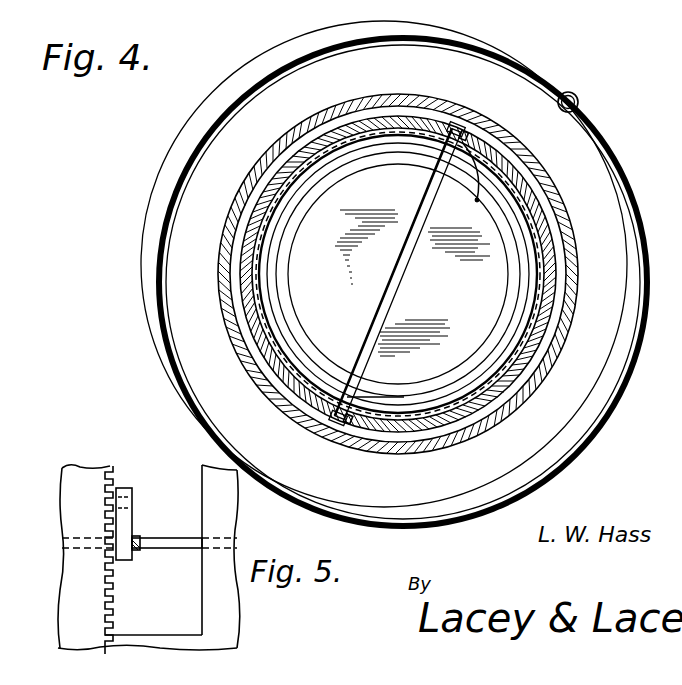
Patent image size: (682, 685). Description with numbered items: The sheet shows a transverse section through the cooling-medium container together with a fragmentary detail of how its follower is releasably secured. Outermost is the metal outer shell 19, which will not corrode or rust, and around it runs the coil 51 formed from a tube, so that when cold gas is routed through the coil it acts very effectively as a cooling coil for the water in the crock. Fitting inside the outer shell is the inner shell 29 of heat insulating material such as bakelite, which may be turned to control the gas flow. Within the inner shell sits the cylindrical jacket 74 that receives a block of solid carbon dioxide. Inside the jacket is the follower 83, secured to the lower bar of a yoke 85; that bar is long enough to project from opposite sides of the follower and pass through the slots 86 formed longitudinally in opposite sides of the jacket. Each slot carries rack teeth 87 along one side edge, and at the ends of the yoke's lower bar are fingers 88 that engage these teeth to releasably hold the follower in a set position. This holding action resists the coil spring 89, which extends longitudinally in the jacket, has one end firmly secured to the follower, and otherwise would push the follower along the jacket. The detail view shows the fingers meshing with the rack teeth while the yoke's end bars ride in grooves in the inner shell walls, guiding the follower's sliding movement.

In FIG. 4, the outer shell 19 is at (518, 163).
In FIG. 4, the inner shell 29 is at (529, 198).
In FIG. 4, the coil 51 is at (605, 402).
In FIG. 4, the cylindrical jacket 74 is at (540, 248).
In FIG. 5, the cylindrical jacket 74 is at (220, 598).
In FIG. 5, the follower 83 is at (180, 532).
In FIG. 4, the yoke 85 is at (399, 275).
In FIG. 5, the yoke 85 is at (126, 525).
In FIG. 4, the slots 86 is at (380, 133).
In FIG. 5, the slots 86 is at (192, 617).
In FIG. 4, the rack teeth 87 is at (476, 150).
In FIG. 5, the rack teeth 87 is at (147, 559).
In FIG. 4, the fingers 88 is at (464, 142).
In FIG. 5, the fingers 88 is at (107, 553).
In FIG. 4, the coil spring 89 is at (502, 323).